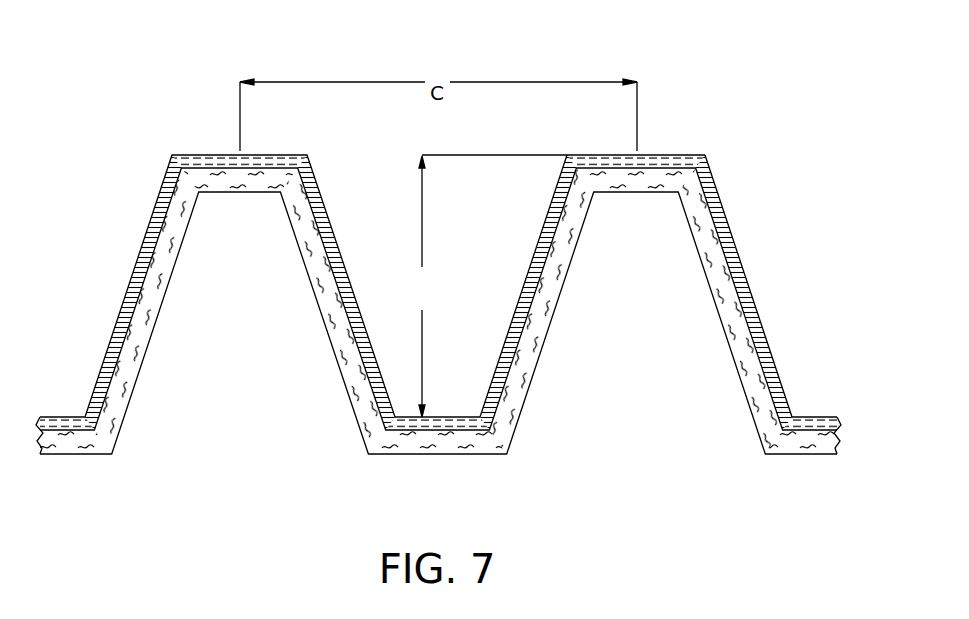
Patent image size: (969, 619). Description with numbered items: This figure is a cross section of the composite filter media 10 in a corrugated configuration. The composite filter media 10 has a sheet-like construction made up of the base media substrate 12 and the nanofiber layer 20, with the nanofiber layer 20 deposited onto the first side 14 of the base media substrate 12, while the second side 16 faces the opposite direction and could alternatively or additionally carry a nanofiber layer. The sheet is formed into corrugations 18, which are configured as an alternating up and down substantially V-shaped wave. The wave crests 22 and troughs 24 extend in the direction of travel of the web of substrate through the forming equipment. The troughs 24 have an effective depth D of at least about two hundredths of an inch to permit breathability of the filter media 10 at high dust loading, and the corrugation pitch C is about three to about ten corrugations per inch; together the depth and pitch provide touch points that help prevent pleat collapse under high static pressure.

The composite filter media 10 is at (438, 271).
The base media substrate 12 is at (753, 395).
The first side 14 is at (812, 432).
The second side 16 is at (805, 455).
The corrugations 18 is at (447, 480).
The nanofiber layer 20 is at (757, 311).
The wave crests 22 is at (676, 146).
The troughs 24 is at (463, 368).